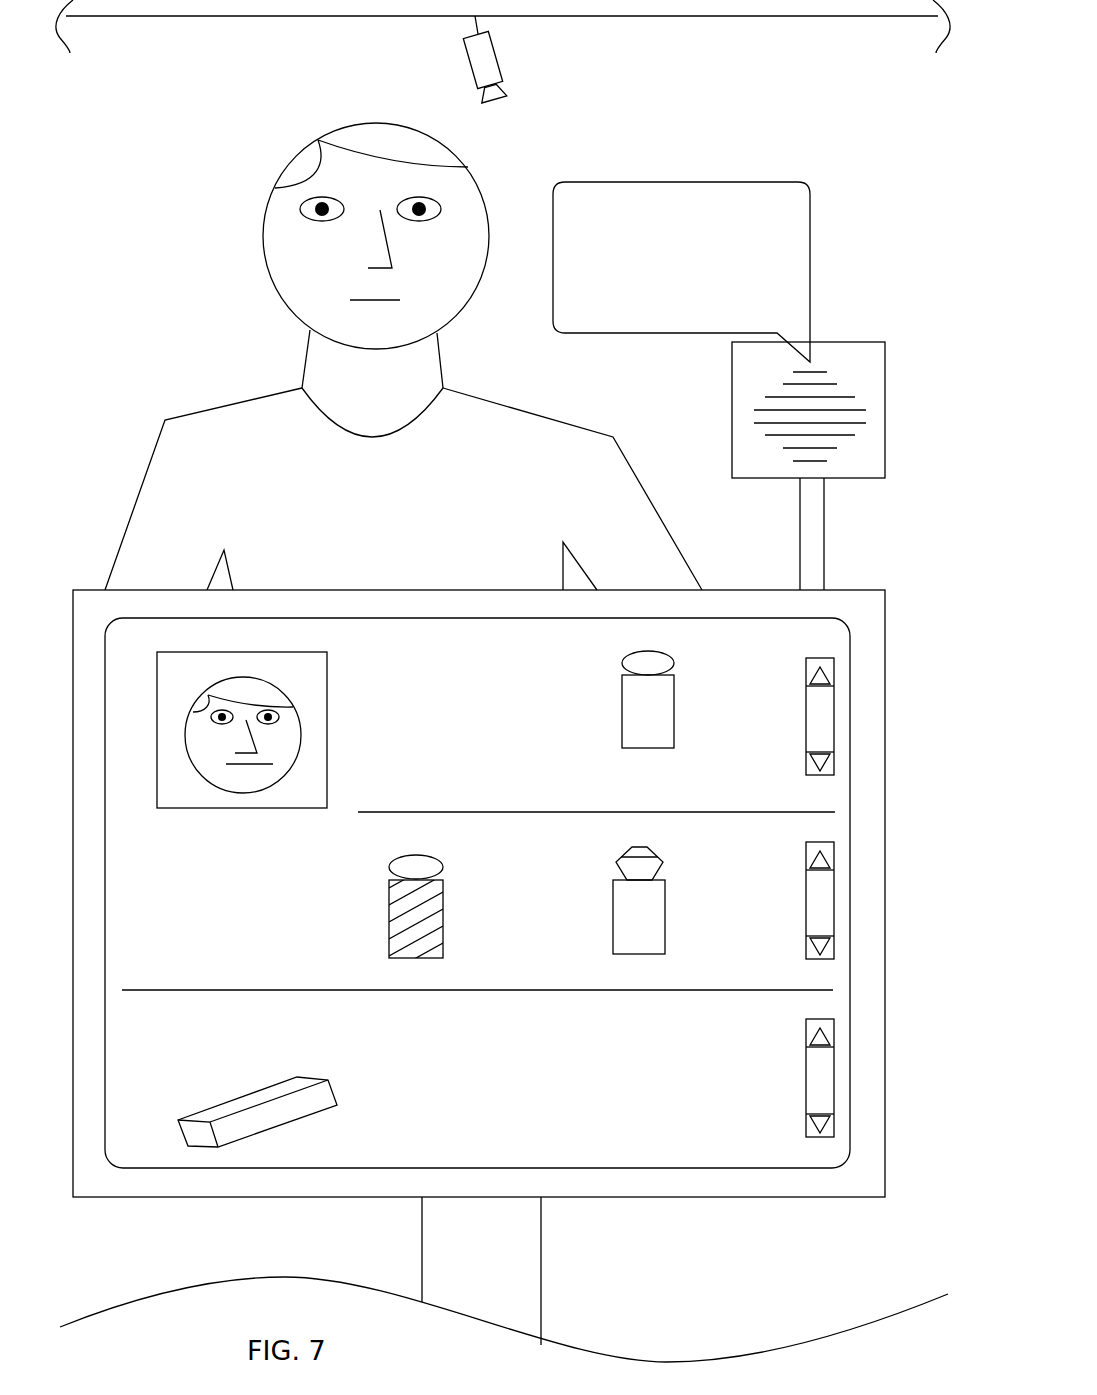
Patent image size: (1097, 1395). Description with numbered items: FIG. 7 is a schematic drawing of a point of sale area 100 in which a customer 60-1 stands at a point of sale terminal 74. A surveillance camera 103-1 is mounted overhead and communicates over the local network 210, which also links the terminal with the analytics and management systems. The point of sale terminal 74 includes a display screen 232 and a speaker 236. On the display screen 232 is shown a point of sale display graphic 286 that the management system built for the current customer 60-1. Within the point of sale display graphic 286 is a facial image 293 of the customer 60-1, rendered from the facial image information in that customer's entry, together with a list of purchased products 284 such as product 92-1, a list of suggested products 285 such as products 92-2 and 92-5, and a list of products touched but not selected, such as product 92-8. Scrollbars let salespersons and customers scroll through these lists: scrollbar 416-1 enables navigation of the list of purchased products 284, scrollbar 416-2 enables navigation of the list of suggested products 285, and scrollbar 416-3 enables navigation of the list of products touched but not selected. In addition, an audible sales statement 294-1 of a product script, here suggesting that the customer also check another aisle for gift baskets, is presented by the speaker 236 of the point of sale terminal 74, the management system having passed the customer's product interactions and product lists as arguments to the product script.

The point of sale area 100 is at (845, 131).
The local network 210 is at (840, 14).
The surveillance camera 103-1 is at (500, 58).
The audible sales statement 294-1 is at (703, 230).
The speaker 236 is at (824, 342).
The customer 60-1 is at (447, 390).
The display screen 232 is at (862, 591).
The facial image 293 is at (278, 690).
The list of purchased products 284 is at (495, 748).
The product 92-1 is at (675, 708).
The scrollbar 416-1 is at (832, 726).
The list of suggested products 285 is at (520, 957).
The product 92-2 is at (443, 920).
The product 92-5 is at (665, 915).
The scrollbar 416-2 is at (832, 897).
The point of sale display graphic 286 is at (660, 1165).
The product 92-8 is at (335, 1091).
The scrollbar 416-3 is at (832, 1078).
The point of sale terminal 74 is at (150, 1229).